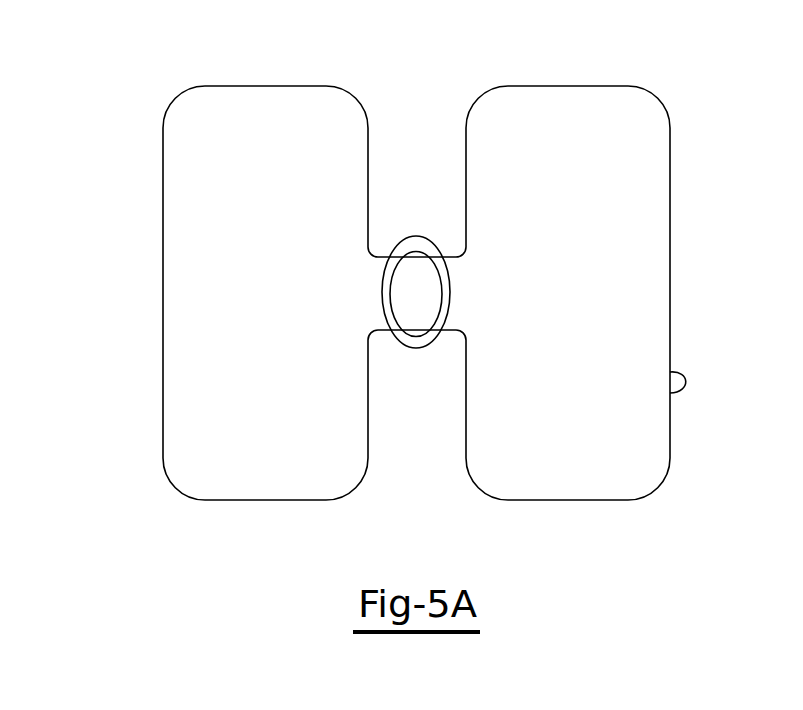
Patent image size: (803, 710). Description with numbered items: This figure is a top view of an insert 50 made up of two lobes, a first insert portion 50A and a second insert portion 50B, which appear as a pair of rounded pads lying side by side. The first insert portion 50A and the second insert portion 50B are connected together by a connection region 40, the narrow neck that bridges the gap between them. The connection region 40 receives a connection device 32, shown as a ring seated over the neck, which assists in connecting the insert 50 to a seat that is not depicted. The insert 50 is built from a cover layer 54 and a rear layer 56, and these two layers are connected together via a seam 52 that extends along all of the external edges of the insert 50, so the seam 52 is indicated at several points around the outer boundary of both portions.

The insert 50 is at (366, 250).
The first insert portion 50A is at (270, 60).
The second insert portion 50B is at (600, 60).
The connection region 40 is at (462, 188).
The connection device 32 is at (447, 300).
The seam 52 is at (163, 195).
The cover layer 54 is at (543, 472).
The rear layer 56 is at (670, 372).